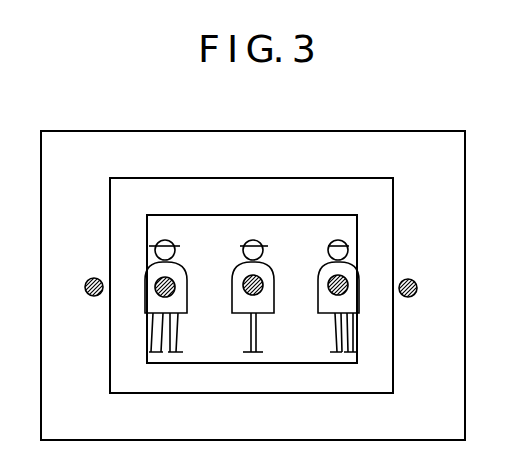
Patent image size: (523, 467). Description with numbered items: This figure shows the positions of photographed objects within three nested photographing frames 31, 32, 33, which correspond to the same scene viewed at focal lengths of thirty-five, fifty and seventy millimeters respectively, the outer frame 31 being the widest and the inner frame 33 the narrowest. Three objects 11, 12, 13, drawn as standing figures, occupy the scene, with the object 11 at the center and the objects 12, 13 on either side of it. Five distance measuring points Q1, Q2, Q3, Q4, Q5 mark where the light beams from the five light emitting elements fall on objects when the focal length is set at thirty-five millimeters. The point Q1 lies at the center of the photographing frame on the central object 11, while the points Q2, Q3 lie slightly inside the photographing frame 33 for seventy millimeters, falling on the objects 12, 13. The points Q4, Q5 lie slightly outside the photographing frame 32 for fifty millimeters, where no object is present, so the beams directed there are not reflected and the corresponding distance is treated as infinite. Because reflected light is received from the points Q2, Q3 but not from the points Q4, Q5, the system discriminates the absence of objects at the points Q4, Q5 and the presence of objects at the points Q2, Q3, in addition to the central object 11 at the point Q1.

The photographing frame 31 is at (353, 131).
The photographing frame 32 is at (295, 178).
The photographing frame 33 is at (237, 215).
The object 11 is at (256, 352).
The object 12 is at (333, 352).
The object 13 is at (176, 353).
The distance measuring point Q1 is at (259, 293).
The distance measuring point Q2 is at (333, 294).
The distance measuring point Q3 is at (172, 296).
The distance measuring point Q4 is at (409, 297).
The distance measuring point Q5 is at (92, 296).